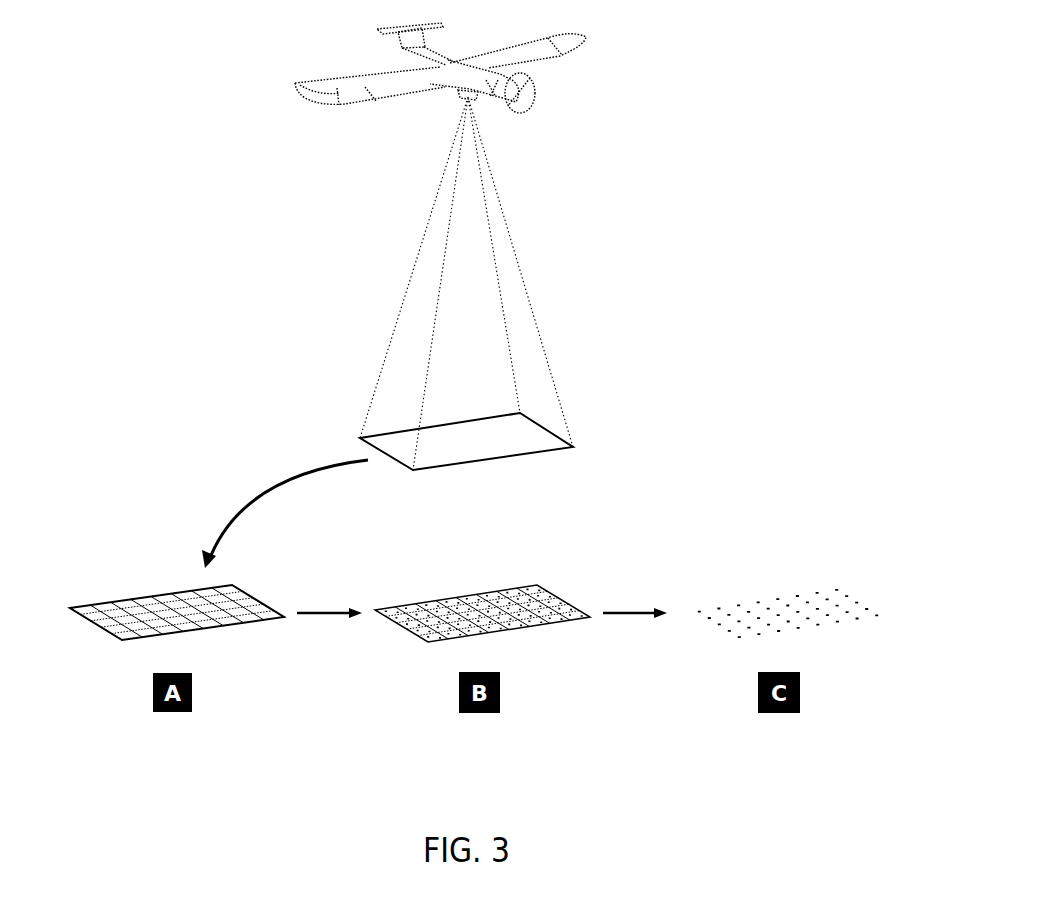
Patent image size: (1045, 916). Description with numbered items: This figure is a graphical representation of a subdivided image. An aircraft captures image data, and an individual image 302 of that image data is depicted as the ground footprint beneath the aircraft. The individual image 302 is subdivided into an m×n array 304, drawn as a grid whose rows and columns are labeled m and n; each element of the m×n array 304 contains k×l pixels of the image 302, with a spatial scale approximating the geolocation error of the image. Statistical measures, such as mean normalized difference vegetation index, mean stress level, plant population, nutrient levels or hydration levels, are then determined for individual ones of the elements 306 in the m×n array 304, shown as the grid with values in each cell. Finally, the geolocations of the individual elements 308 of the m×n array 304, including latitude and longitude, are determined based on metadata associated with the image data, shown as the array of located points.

The individual image 302 is at (542, 425).
The m×n array 304 is at (127, 602).
The elements of the m×n array 306 is at (425, 647).
The individual elements of the m×n array 308 is at (845, 627).